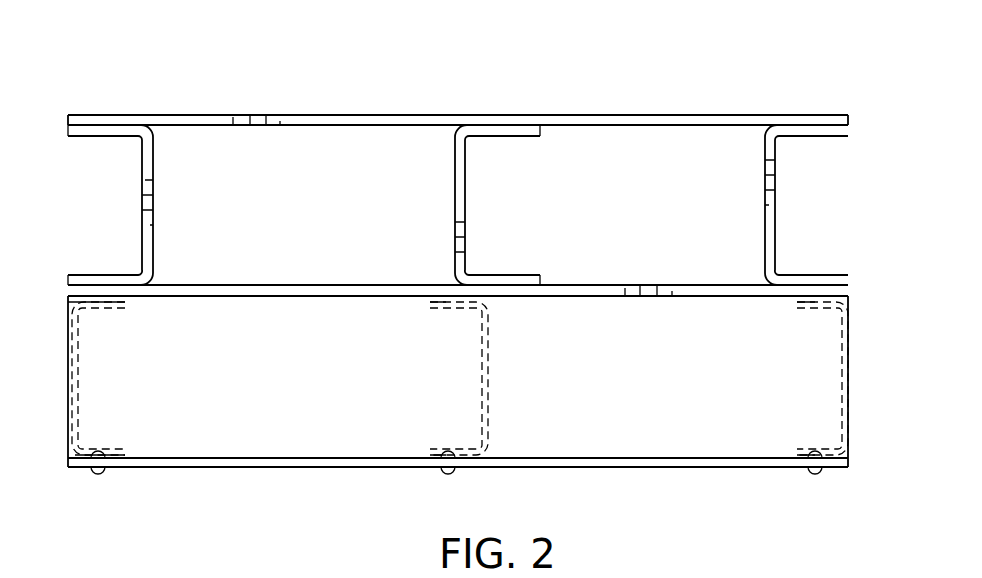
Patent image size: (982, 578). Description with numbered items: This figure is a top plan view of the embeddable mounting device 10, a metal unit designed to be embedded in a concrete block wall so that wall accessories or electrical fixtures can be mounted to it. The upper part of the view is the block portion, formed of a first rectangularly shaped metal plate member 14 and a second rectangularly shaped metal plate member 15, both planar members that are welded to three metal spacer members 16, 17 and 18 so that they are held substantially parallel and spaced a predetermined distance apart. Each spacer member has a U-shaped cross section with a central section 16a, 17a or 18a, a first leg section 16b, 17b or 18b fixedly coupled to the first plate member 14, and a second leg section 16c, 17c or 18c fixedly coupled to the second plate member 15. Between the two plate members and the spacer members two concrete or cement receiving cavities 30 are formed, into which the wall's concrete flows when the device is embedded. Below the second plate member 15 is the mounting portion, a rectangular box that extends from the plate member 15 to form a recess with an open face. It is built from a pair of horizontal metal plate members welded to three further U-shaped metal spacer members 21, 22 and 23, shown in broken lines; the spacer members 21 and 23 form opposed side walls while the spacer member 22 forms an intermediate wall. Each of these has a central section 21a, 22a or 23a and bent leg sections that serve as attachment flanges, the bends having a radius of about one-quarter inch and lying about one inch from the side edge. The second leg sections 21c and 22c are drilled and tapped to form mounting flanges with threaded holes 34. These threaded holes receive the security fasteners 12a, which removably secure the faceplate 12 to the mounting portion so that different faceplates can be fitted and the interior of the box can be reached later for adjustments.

The embeddable mounting device 10 is at (722, 65).
The faceplate 12 is at (231, 468).
The security fasteners 12a is at (100, 474).
The first rectangularly shaped metal plate member 14 is at (549, 112).
The second rectangularly shaped metal plate member 15 is at (601, 284).
The spacer member 16 is at (156, 200).
The central section 16a is at (142, 206).
The first leg section 16b is at (100, 137).
The second leg section 16c is at (102, 274).
The spacer member 17 is at (453, 204).
The central section 17a is at (459, 206).
The first leg section 17b is at (505, 137).
The second leg section 17c is at (505, 274).
The spacer member 18 is at (762, 190).
The central section 18a is at (766, 220).
The first leg section 18b is at (813, 137).
The second leg section 18c is at (813, 274).
The spacer member 21 is at (98, 303).
The central section 21a is at (78, 420).
The second leg section 21c is at (122, 455).
The spacer member 22 is at (456, 303).
The central section 22a is at (482, 371).
The second leg section 22c is at (806, 455).
The spacer member 23 is at (806, 303).
The central section 23a is at (842, 371).
The concrete or cement receiving cavities 30 is at (307, 174).
The threaded holes 34 is at (105, 450).